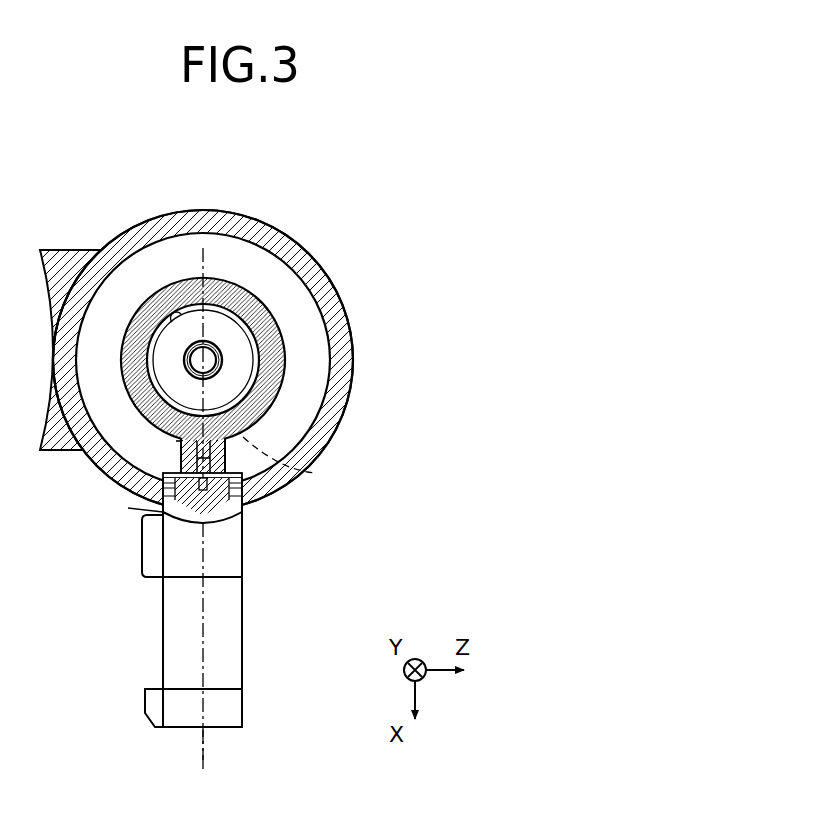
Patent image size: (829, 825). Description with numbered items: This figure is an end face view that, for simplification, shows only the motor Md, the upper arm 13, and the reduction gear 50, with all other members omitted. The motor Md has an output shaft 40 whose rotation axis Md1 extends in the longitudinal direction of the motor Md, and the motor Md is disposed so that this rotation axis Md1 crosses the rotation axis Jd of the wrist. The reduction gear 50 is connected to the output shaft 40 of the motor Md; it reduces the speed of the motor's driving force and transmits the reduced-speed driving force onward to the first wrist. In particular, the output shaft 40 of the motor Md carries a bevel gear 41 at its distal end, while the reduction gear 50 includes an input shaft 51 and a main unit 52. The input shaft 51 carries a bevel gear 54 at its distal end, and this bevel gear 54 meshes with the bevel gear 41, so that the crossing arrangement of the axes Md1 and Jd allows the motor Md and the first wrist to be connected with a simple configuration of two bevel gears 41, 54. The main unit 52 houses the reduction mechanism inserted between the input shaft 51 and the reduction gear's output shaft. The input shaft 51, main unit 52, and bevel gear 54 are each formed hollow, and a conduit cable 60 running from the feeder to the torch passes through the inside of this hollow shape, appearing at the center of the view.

The upper arm 13 is at (232, 212).
The reduction gear 50 is at (130, 250).
The input shaft 51 is at (188, 297).
The main unit 52 is at (125, 287).
The bevel gear 54 is at (262, 390).
The conduit cable 60 is at (216, 348).
The rotation axis Jd is at (203, 360).
The bevel gear 41 is at (315, 473).
The output shaft 40 is at (243, 512).
The motor Md is at (163, 612).
The rotation axis Md1 is at (206, 752).